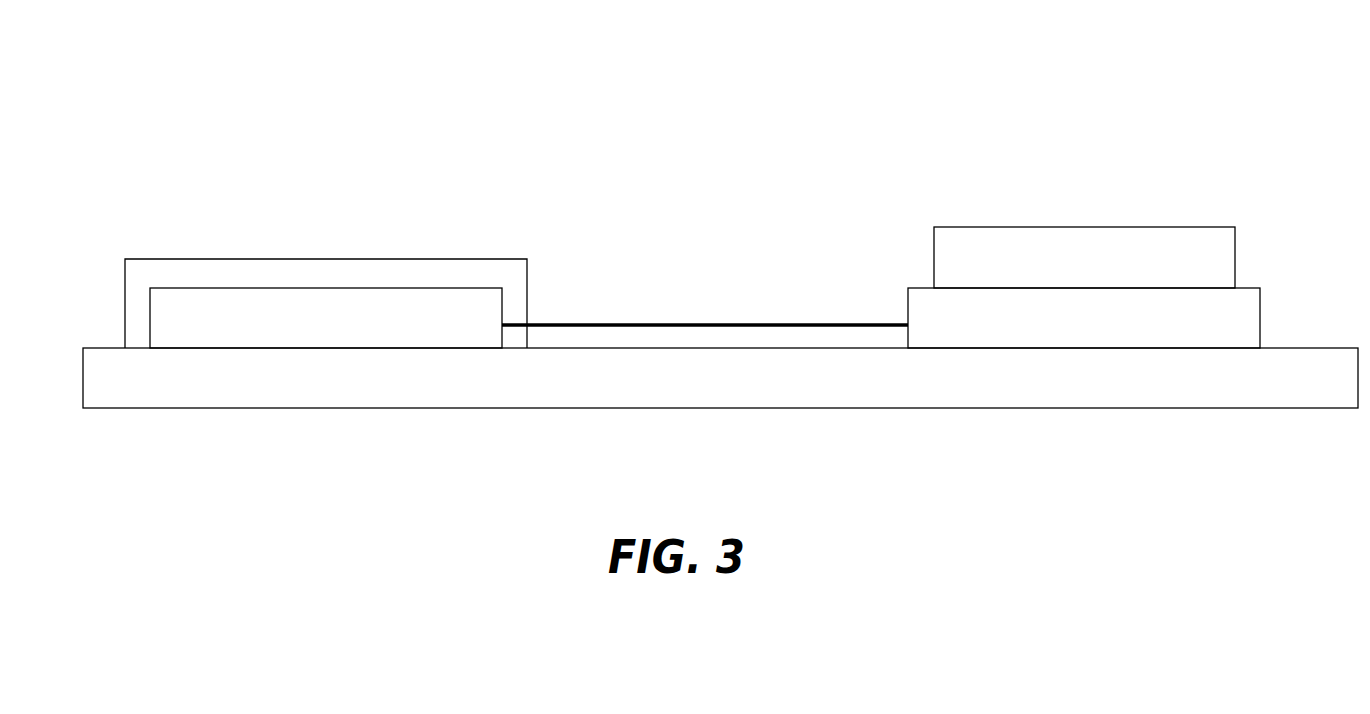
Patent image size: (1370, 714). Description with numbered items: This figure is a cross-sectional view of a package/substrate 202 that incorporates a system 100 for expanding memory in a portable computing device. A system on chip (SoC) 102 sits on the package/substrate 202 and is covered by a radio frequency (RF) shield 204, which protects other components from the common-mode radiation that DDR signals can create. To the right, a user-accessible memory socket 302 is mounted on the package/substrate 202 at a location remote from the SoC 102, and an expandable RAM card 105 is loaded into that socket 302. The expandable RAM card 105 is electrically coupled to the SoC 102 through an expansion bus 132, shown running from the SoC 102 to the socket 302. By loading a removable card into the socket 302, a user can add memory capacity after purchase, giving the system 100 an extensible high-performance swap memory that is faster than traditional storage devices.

The system 100 is at (975, 104).
The system on chip (SoC) 102 is at (382, 331).
The expandable RAM card 105 is at (1183, 269).
The expansion bus 132 is at (721, 323).
The package/substrate 202 is at (890, 389).
The radio frequency (RF) shield 204 is at (393, 259).
The memory socket 302 is at (1167, 331).